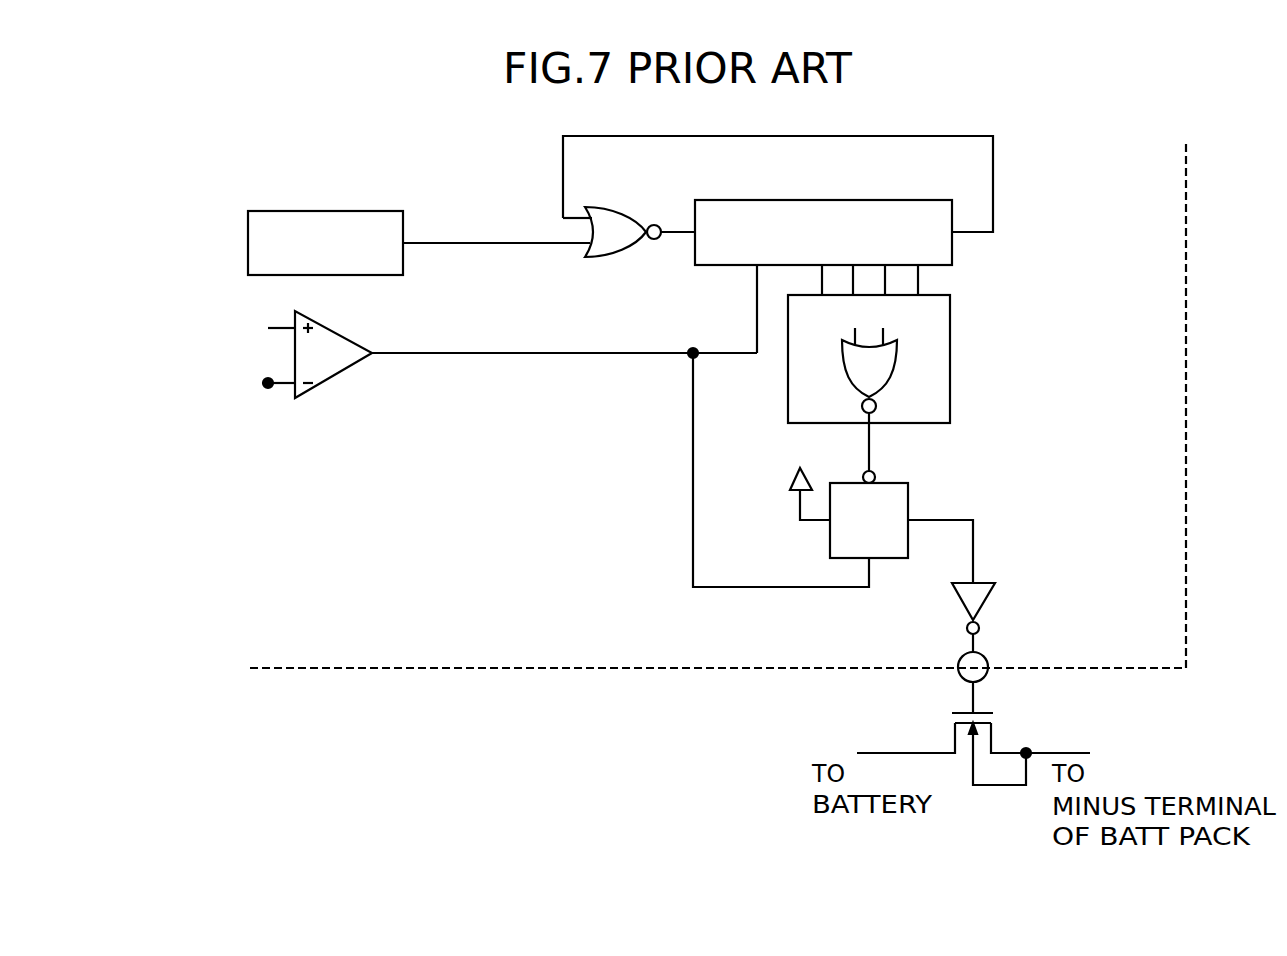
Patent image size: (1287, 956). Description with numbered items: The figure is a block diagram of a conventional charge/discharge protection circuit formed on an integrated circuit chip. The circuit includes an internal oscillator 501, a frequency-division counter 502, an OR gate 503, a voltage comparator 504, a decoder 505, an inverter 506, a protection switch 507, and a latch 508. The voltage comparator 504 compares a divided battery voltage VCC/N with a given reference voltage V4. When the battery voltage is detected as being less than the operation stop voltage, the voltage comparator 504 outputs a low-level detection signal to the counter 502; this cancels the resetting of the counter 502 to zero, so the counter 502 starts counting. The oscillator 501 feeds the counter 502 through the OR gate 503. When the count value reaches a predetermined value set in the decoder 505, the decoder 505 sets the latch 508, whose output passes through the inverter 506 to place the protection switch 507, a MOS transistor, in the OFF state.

The internal oscillator 501 is at (327, 211).
The frequency-division counter 502 is at (887, 200).
The OR gate 503 is at (595, 207).
The voltage comparator 504 is at (340, 333).
The decoder 505 is at (950, 358).
The inverter 506 is at (985, 600).
The protection switch 507 is at (973, 744).
The latch 508 is at (908, 487).